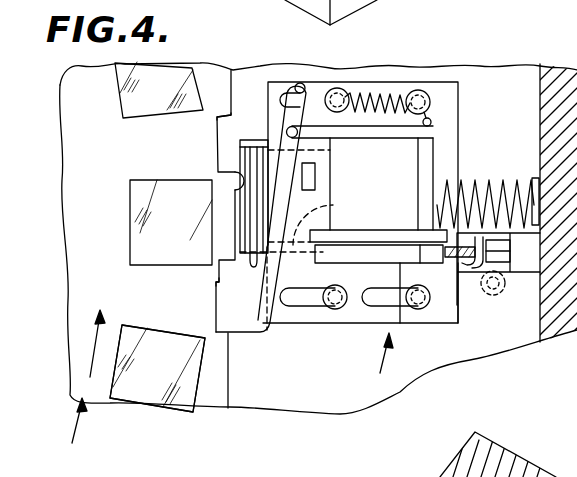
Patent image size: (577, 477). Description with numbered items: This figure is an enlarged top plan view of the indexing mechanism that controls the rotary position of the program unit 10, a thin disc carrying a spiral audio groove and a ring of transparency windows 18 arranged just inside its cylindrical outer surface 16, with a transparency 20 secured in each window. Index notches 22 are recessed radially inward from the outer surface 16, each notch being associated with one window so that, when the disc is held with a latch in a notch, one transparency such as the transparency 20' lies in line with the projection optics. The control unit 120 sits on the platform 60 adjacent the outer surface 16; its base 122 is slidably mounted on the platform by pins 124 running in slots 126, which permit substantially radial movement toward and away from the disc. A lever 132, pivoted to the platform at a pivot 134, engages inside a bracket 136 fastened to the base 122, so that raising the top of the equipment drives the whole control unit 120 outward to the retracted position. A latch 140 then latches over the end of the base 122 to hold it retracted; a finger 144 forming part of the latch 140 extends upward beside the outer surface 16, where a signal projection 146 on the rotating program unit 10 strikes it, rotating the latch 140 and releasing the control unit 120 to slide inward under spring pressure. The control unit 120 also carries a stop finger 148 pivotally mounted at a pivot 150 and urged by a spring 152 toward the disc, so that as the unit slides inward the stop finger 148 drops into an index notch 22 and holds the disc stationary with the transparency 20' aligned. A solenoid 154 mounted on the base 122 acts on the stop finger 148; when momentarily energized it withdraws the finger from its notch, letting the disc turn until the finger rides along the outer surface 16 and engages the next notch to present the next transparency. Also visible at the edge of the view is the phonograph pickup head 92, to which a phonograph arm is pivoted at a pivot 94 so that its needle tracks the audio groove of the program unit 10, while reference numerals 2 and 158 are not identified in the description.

The cabinet wall 2 is at (304, 12).
The program unit 10 is at (86, 391).
The cylindrical outer surface 16 is at (226, 392).
The transparency windows 18 is at (148, 110).
The transparency 20 is at (157, 385).
The transparency 20' is at (143, 222).
The index notches 22 is at (222, 135).
The platform 60 is at (316, 392).
The phonograph pickup head 92 is at (508, 433).
The pivot 94 is at (558, 216).
The control unit 120 is at (349, 234).
The base 122 is at (405, 320).
The pins 124 is at (422, 92).
The slots 126 is at (387, 93).
The lever 132 is at (462, 273).
The pivot 134 is at (507, 275).
The bracket 136 is at (444, 261).
The latch 140 is at (312, 215).
The finger 144 is at (250, 244).
The signal projection 146 is at (236, 183).
The stop finger 148 is at (240, 333).
The pivot 150 is at (287, 128).
The spring 152 is at (363, 100).
The solenoid 154 is at (403, 146).
The compression spring 158 is at (512, 178).